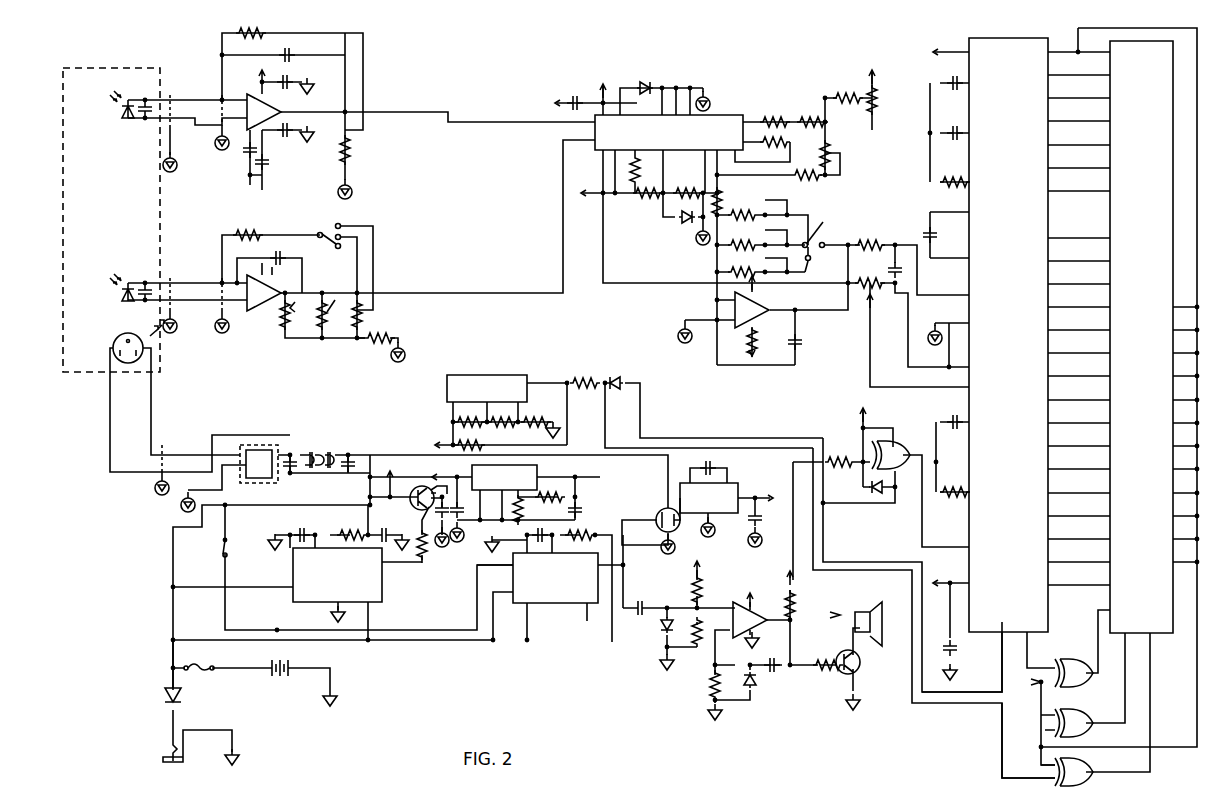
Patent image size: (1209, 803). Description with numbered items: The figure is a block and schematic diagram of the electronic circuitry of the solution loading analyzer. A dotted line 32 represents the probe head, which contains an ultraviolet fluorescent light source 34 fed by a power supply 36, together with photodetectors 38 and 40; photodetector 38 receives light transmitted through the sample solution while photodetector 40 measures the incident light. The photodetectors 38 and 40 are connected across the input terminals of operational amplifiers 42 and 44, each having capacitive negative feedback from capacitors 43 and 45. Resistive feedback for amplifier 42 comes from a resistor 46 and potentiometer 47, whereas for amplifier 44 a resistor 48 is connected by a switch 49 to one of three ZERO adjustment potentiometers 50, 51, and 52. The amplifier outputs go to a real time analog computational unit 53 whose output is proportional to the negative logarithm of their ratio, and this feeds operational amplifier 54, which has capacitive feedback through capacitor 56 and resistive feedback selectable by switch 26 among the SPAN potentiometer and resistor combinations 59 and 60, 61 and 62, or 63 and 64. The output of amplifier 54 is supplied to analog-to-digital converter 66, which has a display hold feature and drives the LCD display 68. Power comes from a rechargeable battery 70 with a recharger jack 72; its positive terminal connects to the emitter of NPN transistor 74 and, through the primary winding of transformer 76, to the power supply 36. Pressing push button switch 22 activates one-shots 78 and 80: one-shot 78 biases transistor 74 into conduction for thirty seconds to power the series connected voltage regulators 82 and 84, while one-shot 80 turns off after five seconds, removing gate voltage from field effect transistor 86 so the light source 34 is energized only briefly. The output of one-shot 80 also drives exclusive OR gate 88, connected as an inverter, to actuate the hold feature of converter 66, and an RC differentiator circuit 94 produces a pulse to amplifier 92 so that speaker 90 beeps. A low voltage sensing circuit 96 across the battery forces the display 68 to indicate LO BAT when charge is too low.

The push button switch 22 is at (216, 554).
The switch 26 is at (830, 241).
The dotted line 32 is at (96, 68).
The ultraviolet fluorescent light source 34 is at (114, 339).
The power supply 36 is at (262, 478).
The photodetector 38 is at (127, 118).
The photodetector 40 is at (120, 283).
The operational amplifier 42 is at (254, 94).
The capacitor 43 is at (294, 55).
The operational amplifier 44 is at (254, 311).
The capacitor 45 is at (284, 258).
The resistor 46 is at (235, 27).
The potentiometer 47 is at (356, 138).
The resistor 48 is at (250, 234).
The switch 49 is at (332, 229).
The potentiometer 50 is at (278, 316).
The potentiometer 51 is at (311, 330).
The potentiometer 52 is at (368, 315).
The real time analog computational unit 53 is at (716, 217).
The operational amplifier 54 is at (758, 316).
The capacitor 56 is at (798, 350).
The SPAN potentiometer 59 is at (780, 202).
The resistor 60 is at (752, 196).
The SPAN potentiometer 61 is at (810, 224).
The resistor 62 is at (752, 244).
The SPAN potentiometer 63 is at (812, 258).
The resistor 64 is at (720, 271).
The analog-to-digital converter 66 is at (1059, 407).
The LCD display 68 is at (1123, 337).
The battery 70 is at (268, 676).
The jack 72 is at (158, 762).
The NPN transistor 74 is at (426, 482).
The transformer 76 is at (338, 452).
The one-shot 78 is at (338, 572).
The one-shot 80 is at (551, 585).
The voltage regulator 82 is at (484, 506).
The voltage regulator 84 is at (734, 488).
The field effect transistor 86 is at (650, 516).
The exclusive OR gate 88 is at (895, 446).
The speaker 90 is at (874, 624).
The amplifier 92 is at (762, 598).
The RC differentiator circuit 94 is at (658, 604).
The low voltage sensing circuit 96 is at (494, 375).